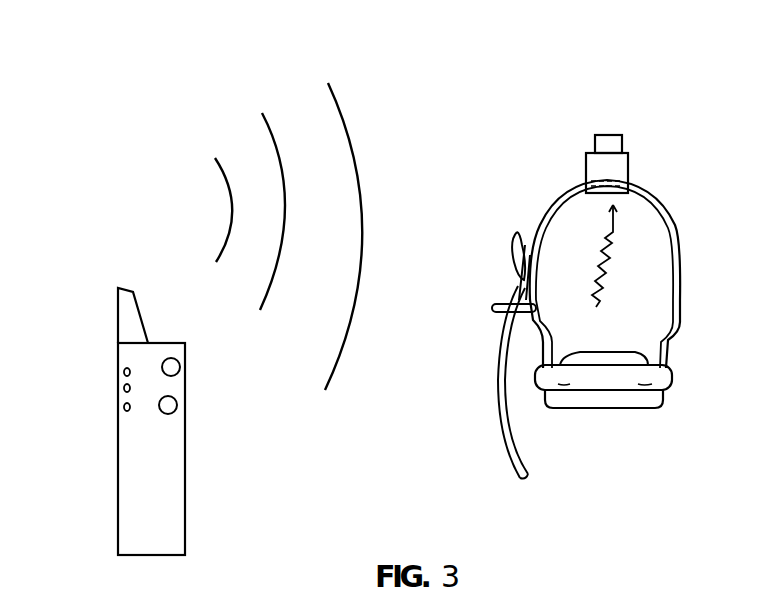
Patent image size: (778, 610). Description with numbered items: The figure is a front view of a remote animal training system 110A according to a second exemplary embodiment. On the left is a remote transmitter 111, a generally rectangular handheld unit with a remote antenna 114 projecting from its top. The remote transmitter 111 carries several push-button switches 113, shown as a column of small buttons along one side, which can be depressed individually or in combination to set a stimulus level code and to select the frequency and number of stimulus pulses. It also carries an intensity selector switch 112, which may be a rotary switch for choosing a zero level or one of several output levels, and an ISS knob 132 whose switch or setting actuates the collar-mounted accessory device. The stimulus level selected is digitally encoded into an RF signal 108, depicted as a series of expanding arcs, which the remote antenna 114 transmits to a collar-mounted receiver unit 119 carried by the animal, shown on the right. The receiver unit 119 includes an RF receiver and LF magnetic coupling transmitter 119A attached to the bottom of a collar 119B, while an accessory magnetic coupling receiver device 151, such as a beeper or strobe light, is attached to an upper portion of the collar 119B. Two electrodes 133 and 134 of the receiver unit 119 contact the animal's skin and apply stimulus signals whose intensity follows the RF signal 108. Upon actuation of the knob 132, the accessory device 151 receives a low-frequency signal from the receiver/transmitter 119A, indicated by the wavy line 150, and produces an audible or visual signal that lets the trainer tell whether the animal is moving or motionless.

The RF signal 108 is at (362, 180).
The remote animal training system 110A is at (172, 440).
The remote transmitter 111 is at (115, 528).
The intensity selector switch 112 is at (192, 372).
The push-button switches 113 is at (121, 407).
The remote antenna 114 is at (90, 312).
The ISS knob 132 is at (188, 406).
The receiver unit 119 is at (614, 310).
The magnetic coupling transmitter 119A is at (603, 386).
The collar 119B is at (681, 288).
The electrode 133 is at (588, 352).
The electrode 134 is at (622, 352).
The receiver antenna 150 is at (613, 228).
The accessory magnetic coupling receiver device 151 is at (628, 163).